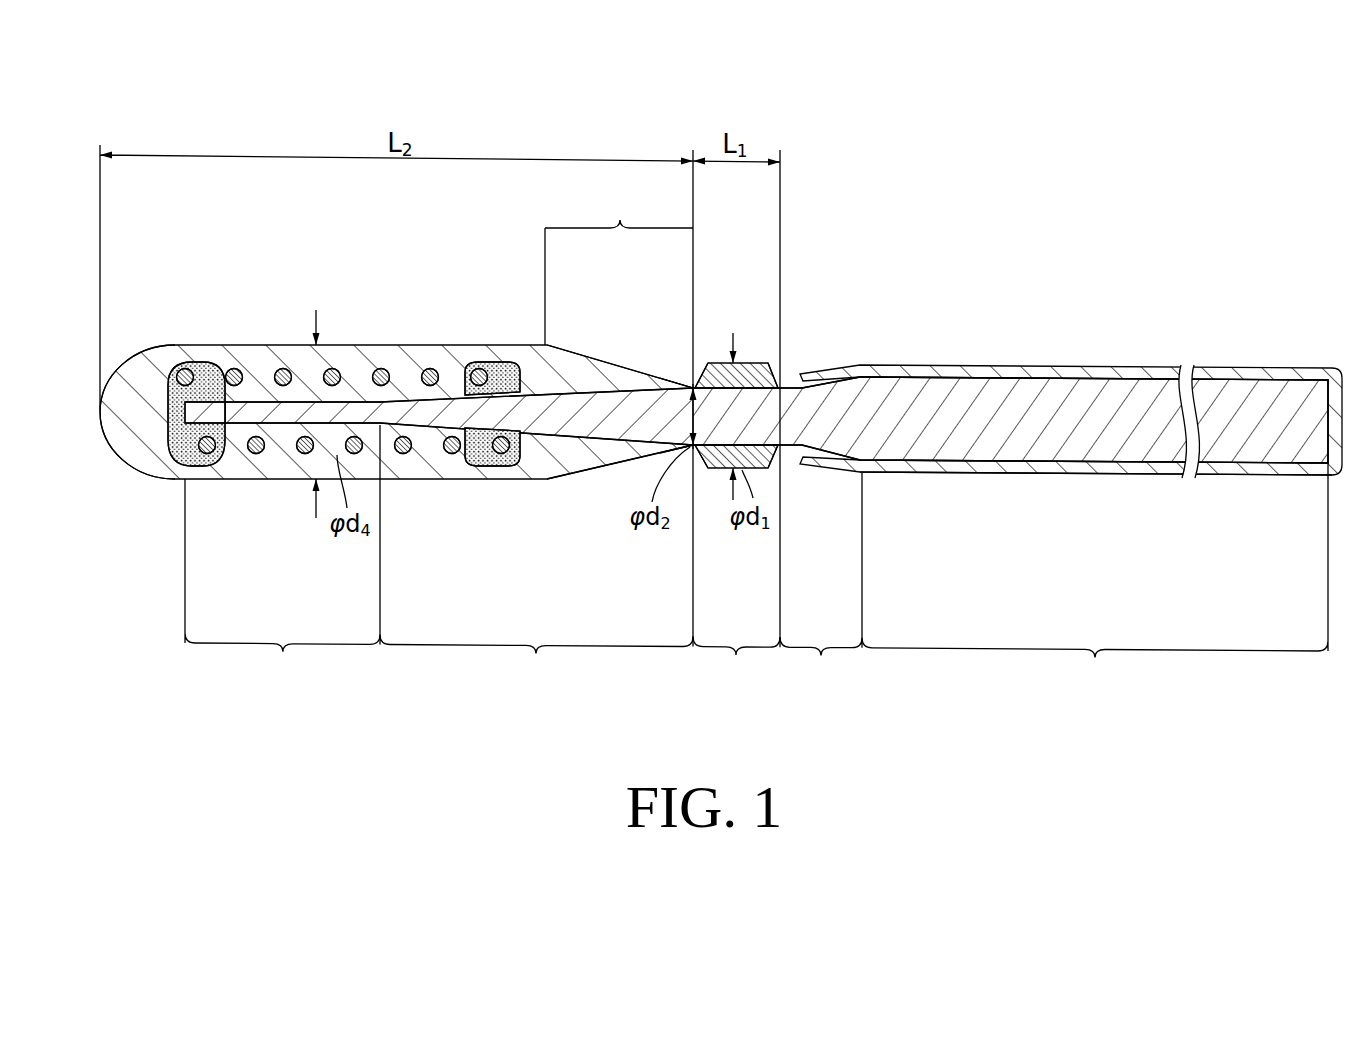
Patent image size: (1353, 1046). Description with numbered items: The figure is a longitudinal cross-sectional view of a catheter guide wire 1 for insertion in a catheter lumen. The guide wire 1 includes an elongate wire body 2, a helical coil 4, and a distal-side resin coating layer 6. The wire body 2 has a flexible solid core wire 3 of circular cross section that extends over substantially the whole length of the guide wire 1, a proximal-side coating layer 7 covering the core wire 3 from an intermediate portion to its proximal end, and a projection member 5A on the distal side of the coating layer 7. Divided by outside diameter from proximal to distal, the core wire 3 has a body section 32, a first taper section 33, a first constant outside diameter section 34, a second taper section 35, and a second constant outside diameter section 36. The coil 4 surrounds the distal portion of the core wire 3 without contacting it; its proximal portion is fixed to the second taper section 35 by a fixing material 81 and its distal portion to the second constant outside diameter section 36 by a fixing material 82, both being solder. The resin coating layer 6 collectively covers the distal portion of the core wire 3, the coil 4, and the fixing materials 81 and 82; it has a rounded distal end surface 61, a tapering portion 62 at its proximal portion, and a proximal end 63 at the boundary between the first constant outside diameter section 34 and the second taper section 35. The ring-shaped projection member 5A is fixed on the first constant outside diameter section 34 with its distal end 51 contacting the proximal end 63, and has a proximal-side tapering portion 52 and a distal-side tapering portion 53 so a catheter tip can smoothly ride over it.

The guide wire 1 is at (701, 337).
The wire body 2 is at (1042, 360).
The core wire 3 is at (993, 400).
The coil 4 is at (427, 352).
The projection member 5A is at (748, 356).
The resin coating layer 6 is at (355, 352).
The coating layer 7 is at (1045, 476).
The body section 32 is at (1095, 577).
The first taper section 33 is at (821, 581).
The first constant outside diameter section 34 is at (736, 662).
The second taper section 35 is at (536, 555).
The second constant outside diameter section 36 is at (282, 581).
The distal end 51 is at (690, 386).
The proximal-side tapering portion 52 is at (769, 362).
The distal-side tapering portion 53 is at (697, 375).
The distal end surface 61 is at (98, 425).
The tapering portion 62 is at (619, 336).
The proximal end 63 is at (676, 418).
The fixing material 81 is at (487, 357).
The fixing material 82 is at (207, 354).